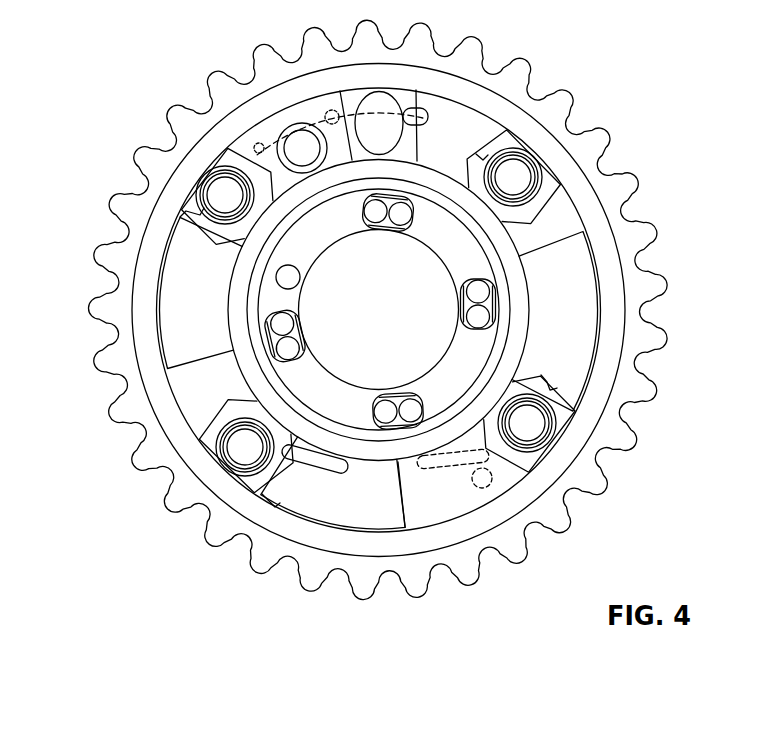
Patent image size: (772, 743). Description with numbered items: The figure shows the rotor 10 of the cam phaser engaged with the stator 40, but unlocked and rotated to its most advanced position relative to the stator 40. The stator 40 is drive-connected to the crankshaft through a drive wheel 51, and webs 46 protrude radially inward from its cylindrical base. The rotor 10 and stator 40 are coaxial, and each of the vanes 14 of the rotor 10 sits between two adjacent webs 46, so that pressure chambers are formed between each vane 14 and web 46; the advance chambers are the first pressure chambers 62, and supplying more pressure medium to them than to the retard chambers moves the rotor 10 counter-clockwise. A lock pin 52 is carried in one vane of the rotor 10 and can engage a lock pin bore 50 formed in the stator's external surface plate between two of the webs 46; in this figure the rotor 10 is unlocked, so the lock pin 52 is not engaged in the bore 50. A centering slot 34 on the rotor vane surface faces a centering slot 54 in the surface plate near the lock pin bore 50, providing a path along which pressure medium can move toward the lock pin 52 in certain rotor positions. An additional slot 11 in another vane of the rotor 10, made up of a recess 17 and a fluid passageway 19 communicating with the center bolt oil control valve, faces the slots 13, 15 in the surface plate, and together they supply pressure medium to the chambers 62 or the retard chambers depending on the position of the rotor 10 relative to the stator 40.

The rotor 10 is at (537, 323).
The additional slot 11 is at (426, 497).
The slot 13 is at (400, 460).
The vanes 14 is at (312, 110).
The slot 15 is at (343, 461).
The recess 17 is at (466, 466).
The fluid passageway 19 is at (486, 487).
The centering slot 34 is at (261, 144).
The stator 40 is at (243, 493).
The webs 46 is at (202, 244).
The lock pin bore 50 is at (403, 142).
The drive wheel 51 is at (638, 240).
The lock pin 52 is at (308, 146).
The centering slot 54 is at (413, 112).
The first pressure chamber 62 is at (173, 287).